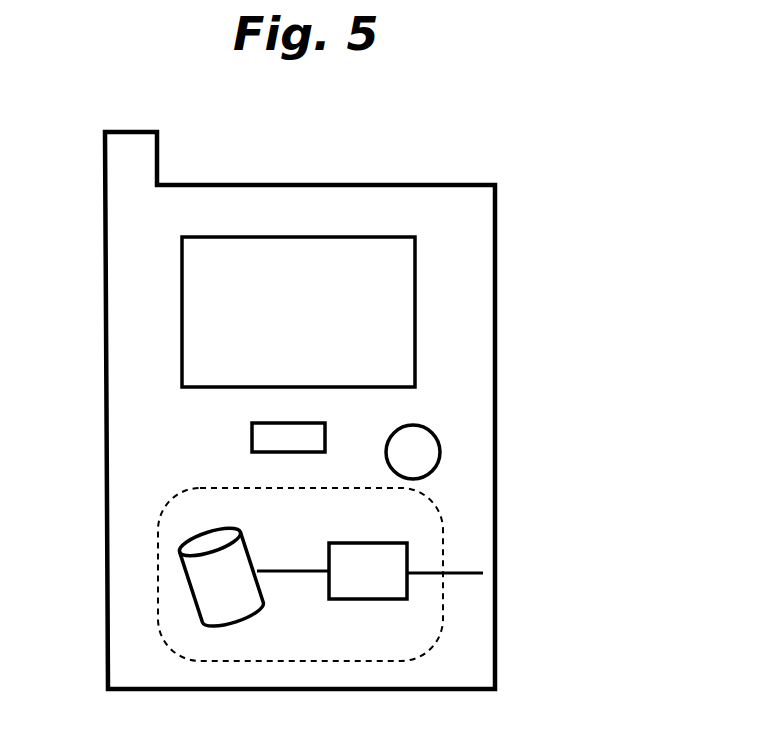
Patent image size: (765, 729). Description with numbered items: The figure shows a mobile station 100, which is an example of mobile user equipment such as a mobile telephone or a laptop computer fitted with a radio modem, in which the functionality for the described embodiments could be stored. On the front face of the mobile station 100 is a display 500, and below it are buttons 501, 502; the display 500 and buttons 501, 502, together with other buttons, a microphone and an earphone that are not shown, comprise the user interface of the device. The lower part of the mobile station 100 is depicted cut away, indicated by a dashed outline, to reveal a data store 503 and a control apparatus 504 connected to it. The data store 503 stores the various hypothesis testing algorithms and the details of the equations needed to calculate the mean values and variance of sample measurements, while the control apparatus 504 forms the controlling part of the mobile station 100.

The mobile station 100 is at (496, 247).
The display 500 is at (304, 236).
The button 501 is at (251, 430).
The button 502 is at (441, 452).
The data store 503 is at (198, 578).
The control apparatus 504 is at (610, 552).